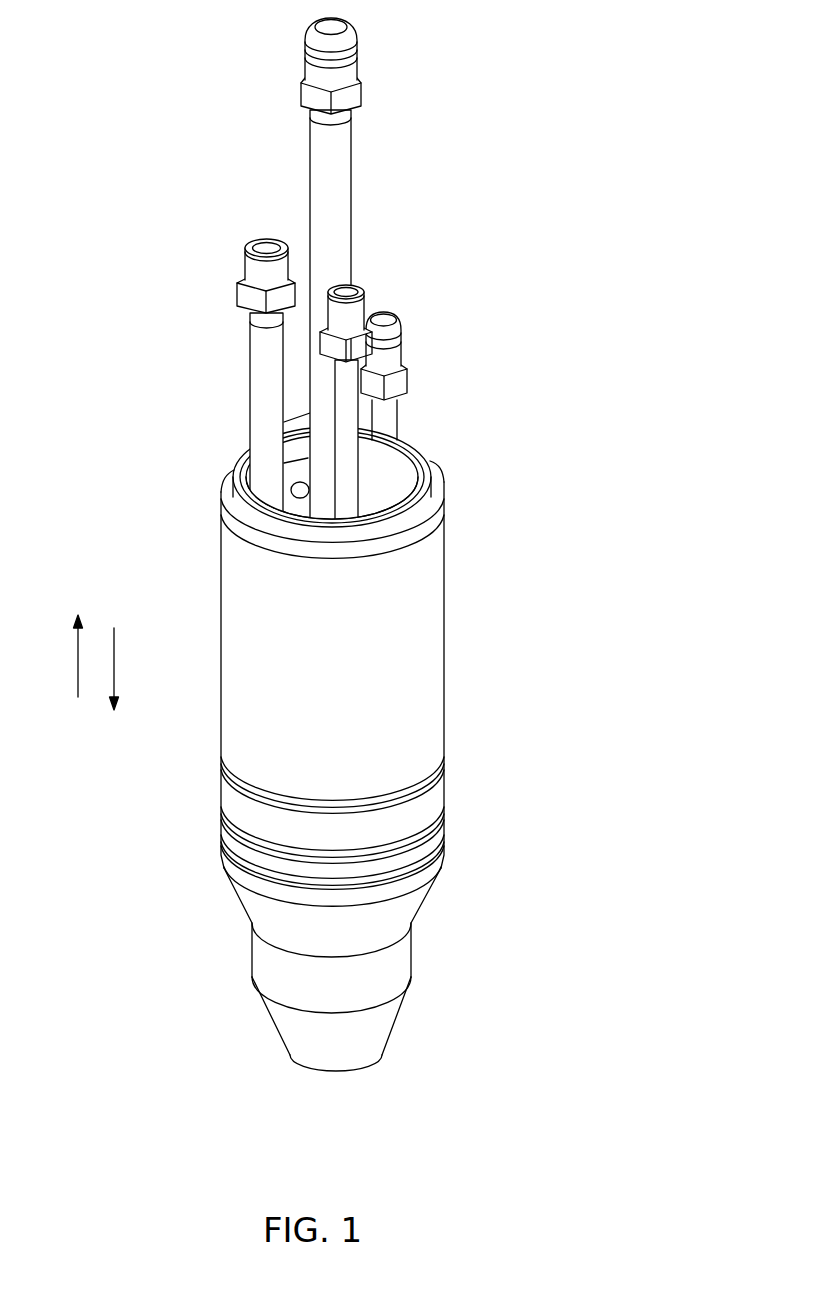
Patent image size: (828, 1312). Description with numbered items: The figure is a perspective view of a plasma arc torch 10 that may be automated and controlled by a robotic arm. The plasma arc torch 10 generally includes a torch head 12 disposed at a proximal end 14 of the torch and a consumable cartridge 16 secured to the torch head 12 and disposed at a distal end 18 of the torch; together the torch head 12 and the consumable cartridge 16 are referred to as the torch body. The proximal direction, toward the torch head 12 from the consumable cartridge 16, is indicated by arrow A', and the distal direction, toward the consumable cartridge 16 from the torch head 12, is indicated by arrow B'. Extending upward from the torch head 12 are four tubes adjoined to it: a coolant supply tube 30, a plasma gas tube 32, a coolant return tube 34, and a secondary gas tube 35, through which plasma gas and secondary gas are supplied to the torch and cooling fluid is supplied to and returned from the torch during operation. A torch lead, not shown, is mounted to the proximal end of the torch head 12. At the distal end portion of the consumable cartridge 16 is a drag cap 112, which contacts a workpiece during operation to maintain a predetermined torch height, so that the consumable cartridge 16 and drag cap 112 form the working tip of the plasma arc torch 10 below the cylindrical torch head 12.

The plasma arc torch 10 is at (603, 404).
The torch head 12 is at (461, 612).
The proximal end 14 is at (203, 522).
The consumable cartridge 16 is at (433, 946).
The distal end 18 is at (242, 1027).
The drag cap 112 is at (392, 1018).
The coolant supply tube 30 is at (318, 184).
The plasma gas tube 32 is at (356, 430).
The coolant return tube 34 is at (395, 404).
The secondary gas tube 35 is at (260, 370).